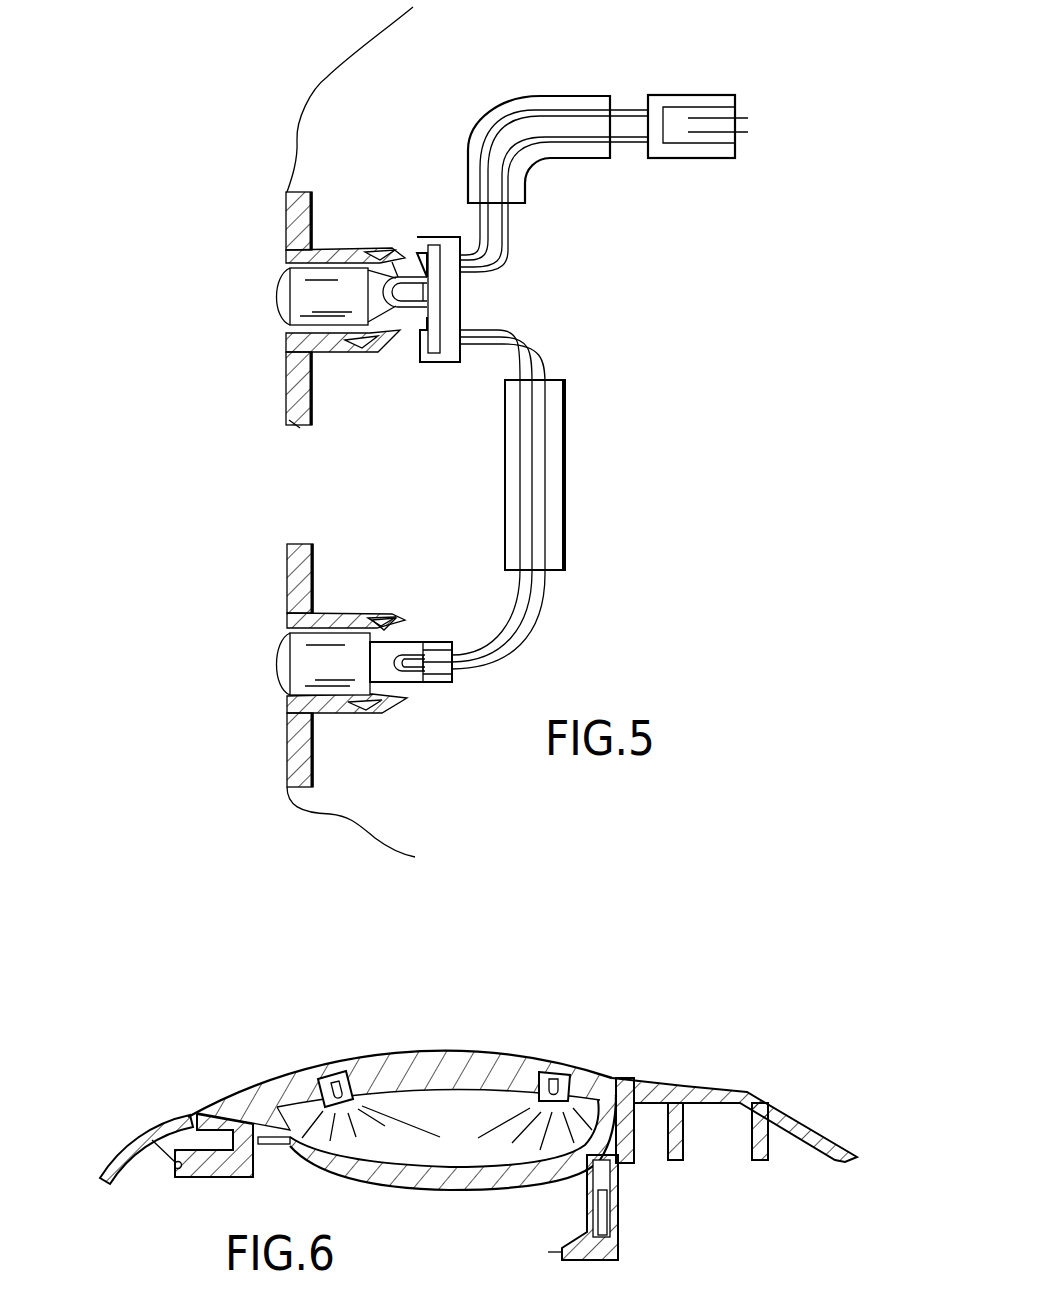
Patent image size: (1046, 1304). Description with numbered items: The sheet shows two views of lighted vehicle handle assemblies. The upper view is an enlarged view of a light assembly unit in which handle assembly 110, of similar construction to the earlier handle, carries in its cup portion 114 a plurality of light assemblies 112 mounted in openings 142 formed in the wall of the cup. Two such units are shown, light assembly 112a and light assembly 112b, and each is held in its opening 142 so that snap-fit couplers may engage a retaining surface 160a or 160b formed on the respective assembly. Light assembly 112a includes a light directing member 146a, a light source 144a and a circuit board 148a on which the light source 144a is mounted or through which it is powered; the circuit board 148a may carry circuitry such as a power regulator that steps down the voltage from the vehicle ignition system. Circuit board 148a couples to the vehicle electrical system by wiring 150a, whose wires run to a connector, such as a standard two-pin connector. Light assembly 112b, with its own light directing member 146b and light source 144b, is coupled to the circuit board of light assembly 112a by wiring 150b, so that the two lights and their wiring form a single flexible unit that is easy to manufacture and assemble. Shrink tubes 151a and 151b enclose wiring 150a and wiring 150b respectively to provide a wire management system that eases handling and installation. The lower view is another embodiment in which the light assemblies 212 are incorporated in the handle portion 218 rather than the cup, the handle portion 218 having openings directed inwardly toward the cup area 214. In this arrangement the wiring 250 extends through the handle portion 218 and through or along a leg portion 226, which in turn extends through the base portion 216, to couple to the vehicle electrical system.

In FIG. 5, the handle assembly 110 is at (235, 227).
In FIG. 5, the light assemblies 112 is at (188, 330).
In FIG. 5, the light assembly 112a is at (268, 330).
In FIG. 5, the light assembly 112b is at (236, 666).
In FIG. 5, the cup portion 114 is at (284, 598).
In FIG. 5, the openings 142 is at (285, 262).
In FIG. 5, the light source 144a is at (388, 272).
In FIG. 5, the light source 144b is at (410, 676).
In FIG. 5, the light directing member 146a is at (343, 317).
In FIG. 5, the light directing member 146b is at (296, 706).
In FIG. 5, the circuit board 148a is at (455, 297).
In FIG. 5, the wiring 150a is at (507, 223).
In FIG. 5, the wiring 150b is at (543, 513).
In FIG. 5, the shrink tube 151a is at (540, 96).
In FIG. 5, the shrink tube 151b is at (568, 427).
In FIG. 5, the retaining surface 160a is at (380, 246).
In FIG. 5, the retaining surface 160b is at (385, 613).
In FIG. 6, the light assemblies 212 is at (580, 1015).
In FIG. 6, the cup area 214 is at (438, 1166).
In FIG. 6, the base portion 216 is at (136, 1124).
In FIG. 6, the handle portion 218 is at (282, 1070).
In FIG. 6, the leg portion 226 is at (618, 1082).
In FIG. 6, the wiring 250 is at (492, 1052).